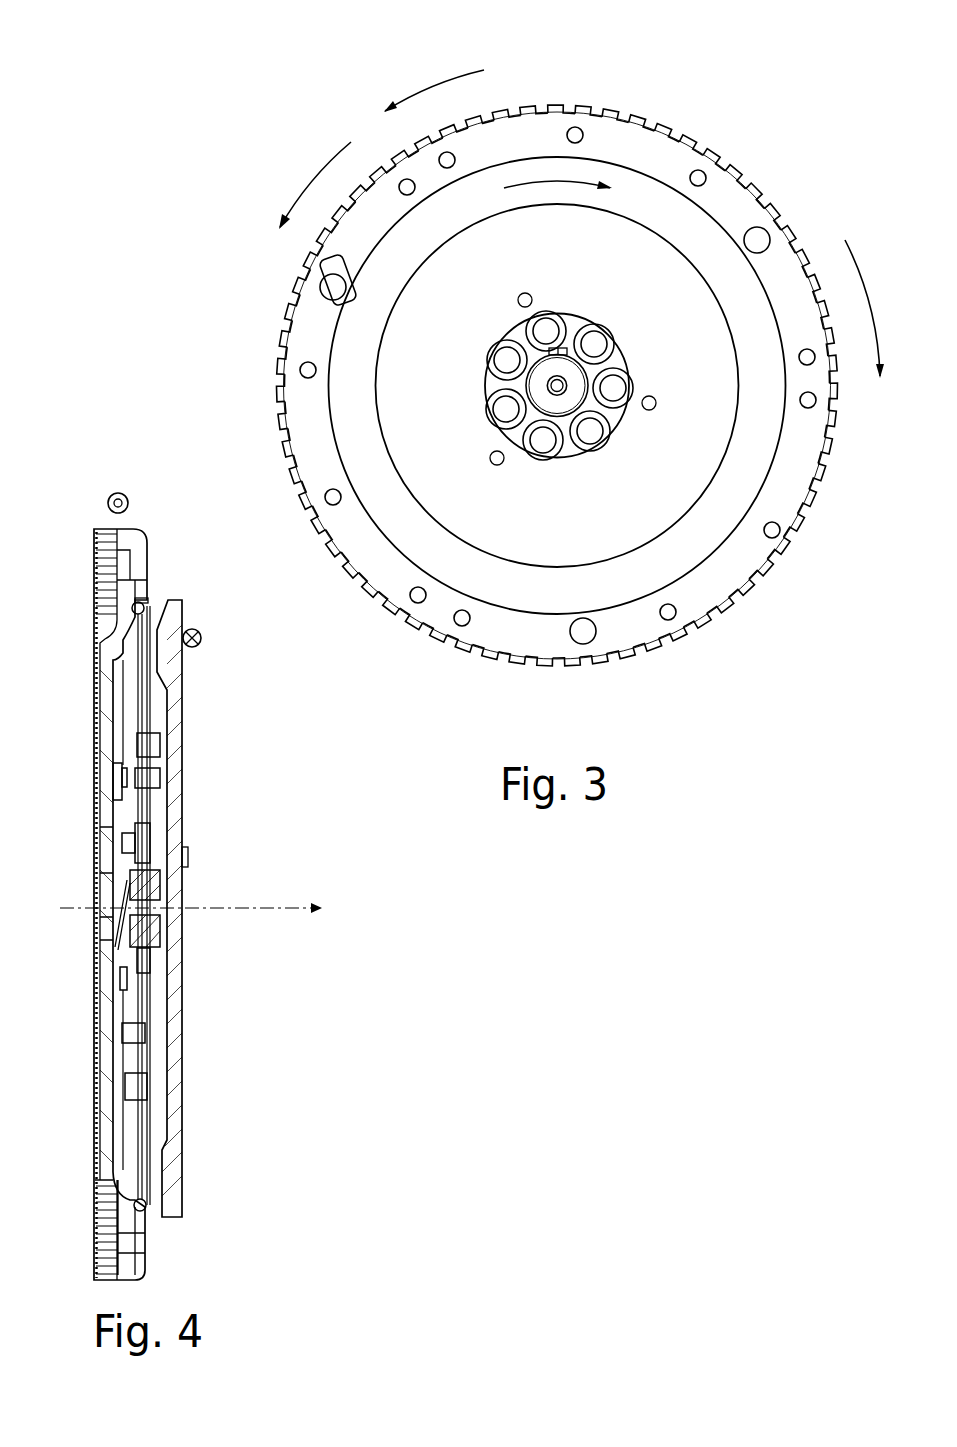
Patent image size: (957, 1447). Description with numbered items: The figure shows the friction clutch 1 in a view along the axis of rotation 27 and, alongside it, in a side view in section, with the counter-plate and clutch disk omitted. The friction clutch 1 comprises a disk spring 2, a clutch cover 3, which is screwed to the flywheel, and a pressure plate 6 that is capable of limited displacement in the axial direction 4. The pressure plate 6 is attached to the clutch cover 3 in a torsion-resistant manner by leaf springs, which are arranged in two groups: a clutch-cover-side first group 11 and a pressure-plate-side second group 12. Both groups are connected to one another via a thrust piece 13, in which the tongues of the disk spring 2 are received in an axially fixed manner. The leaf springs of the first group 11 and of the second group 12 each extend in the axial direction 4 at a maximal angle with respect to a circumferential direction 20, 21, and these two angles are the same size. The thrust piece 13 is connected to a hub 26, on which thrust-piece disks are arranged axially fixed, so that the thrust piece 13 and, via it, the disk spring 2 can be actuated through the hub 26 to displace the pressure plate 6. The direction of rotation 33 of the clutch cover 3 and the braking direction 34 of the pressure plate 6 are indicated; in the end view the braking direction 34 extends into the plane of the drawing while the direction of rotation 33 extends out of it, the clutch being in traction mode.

In FIG. 3, the friction clutch 1 is at (734, 92).
In FIG. 4, the friction clutch 1 is at (78, 566).
In FIG. 4, the disk spring 2 is at (142, 603).
In FIG. 3, the clutch cover 3 is at (660, 160).
In FIG. 4, the clutch cover 3 is at (94, 637).
In FIG. 4, the axial direction 4 is at (326, 908).
In FIG. 3, the pressure plate 6 is at (703, 238).
In FIG. 4, the pressure plate 6 is at (182, 707).
In FIG. 4, the first group 11 is at (115, 917).
In FIG. 4, the second group 12 is at (157, 808).
In FIG. 3, the thrust piece 13 is at (569, 445).
In FIG. 4, the thrust piece 13 is at (152, 803).
In FIG. 3, the circumferential direction 20 is at (315, 185).
In FIG. 3, the circumferential direction 21 is at (877, 309).
In FIG. 3, the hub 26 is at (545, 403).
In FIG. 4, the hub 26 is at (163, 930).
In FIG. 3, the axis of rotation 27 is at (548, 386).
In FIG. 4, the axis of rotation 27 is at (305, 905).
In FIG. 3, the direction of rotation 33 is at (434, 87).
In FIG. 4, the direction of rotation 33 is at (119, 492).
In FIG. 3, the braking direction 34 is at (578, 180).
In FIG. 4, the braking direction 34 is at (201, 635).